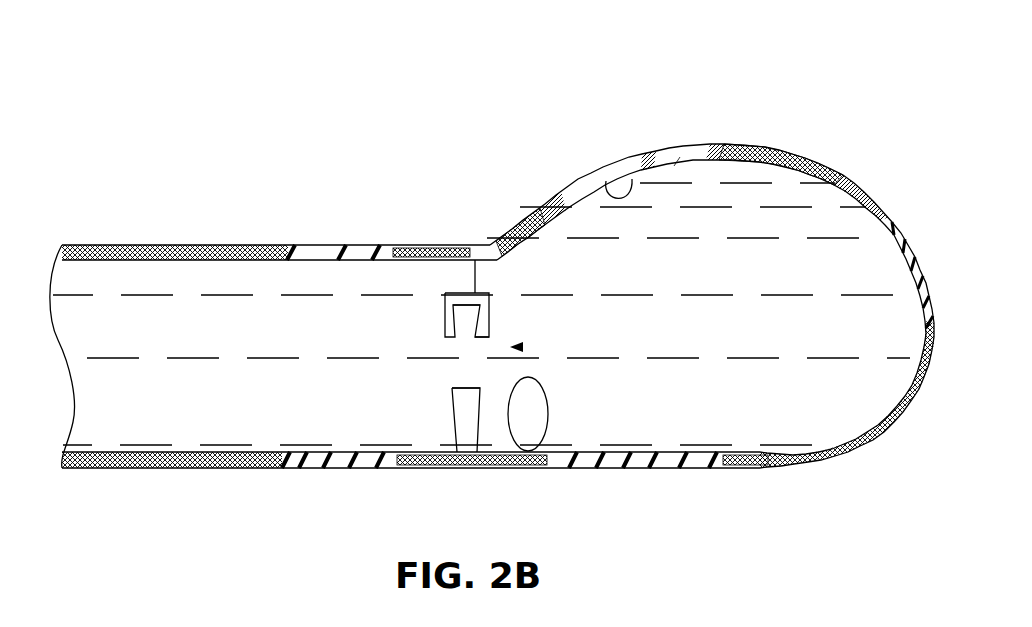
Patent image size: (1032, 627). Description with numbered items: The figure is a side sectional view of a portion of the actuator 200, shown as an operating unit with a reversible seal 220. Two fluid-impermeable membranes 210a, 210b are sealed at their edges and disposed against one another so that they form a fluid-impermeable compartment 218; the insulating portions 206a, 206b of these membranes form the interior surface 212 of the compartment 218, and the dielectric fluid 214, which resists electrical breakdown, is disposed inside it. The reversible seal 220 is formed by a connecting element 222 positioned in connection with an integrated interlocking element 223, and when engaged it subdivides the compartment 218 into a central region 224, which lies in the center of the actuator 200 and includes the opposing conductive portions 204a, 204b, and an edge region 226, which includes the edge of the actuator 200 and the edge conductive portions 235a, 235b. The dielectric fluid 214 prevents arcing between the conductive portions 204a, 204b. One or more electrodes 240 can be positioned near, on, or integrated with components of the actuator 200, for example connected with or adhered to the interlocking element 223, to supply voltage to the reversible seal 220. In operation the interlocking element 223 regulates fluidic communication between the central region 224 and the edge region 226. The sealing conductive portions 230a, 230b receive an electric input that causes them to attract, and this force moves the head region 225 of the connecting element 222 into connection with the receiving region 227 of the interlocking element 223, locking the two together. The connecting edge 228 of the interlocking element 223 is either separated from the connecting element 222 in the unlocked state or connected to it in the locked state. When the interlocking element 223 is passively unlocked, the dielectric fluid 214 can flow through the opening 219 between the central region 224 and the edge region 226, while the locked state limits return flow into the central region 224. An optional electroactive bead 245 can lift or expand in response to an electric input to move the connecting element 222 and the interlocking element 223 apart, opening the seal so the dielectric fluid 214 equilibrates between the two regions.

The actuator 200 is at (125, 97).
The conductive portion 204a is at (160, 245).
The conductive portion 204b is at (190, 468).
The central region 224 is at (88, 273).
The electrode 240 is at (302, 245).
The compartment 218 is at (355, 280).
The receiving region 227 is at (443, 330).
The interlocking element 223 is at (477, 310).
The sealing conductive portion 230a is at (530, 205).
The interior surface 212 is at (608, 180).
The insulating portion 206a is at (672, 160).
The dielectric fluid 214 is at (707, 197).
The edge conductive portion 235a is at (788, 152).
The edge region 226 is at (827, 210).
The fluid-impermeable membrane 210a is at (907, 232).
The fluid-impermeable membrane 210b is at (897, 432).
The edge conductive portion 235b is at (840, 458).
The insulating portion 206b is at (695, 465).
The reversible seal 220 is at (523, 347).
The connecting edge 228 is at (478, 340).
The opening 219 is at (450, 360).
The head region 225 is at (460, 398).
The connecting element 222 is at (463, 397).
The sealing conductive portion 230b is at (525, 453).
The electroactive bead 245 is at (547, 425).